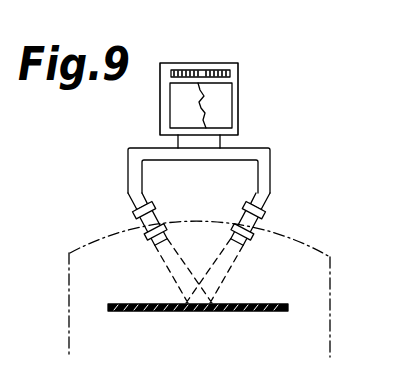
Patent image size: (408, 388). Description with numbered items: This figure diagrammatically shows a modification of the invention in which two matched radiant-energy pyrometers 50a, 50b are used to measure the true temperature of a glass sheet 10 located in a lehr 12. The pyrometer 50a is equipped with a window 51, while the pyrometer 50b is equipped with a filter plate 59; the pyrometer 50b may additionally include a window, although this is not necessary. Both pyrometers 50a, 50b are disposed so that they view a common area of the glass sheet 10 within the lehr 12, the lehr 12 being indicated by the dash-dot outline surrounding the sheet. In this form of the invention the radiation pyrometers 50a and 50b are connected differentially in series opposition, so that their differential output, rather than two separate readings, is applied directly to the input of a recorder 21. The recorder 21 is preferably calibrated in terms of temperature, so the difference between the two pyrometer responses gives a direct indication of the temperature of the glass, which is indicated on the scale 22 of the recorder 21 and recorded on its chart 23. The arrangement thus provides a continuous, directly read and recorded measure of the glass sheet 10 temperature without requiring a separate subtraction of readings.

The glass sheet 10 is at (260, 313).
The lehr 12 is at (331, 297).
The recorder 21 is at (238, 78).
The scale 22 is at (211, 72).
The chart 23 is at (225, 112).
The radiant-energy pyrometer 50a is at (157, 207).
The radiant-energy pyrometer 50b is at (261, 213).
The window 51 is at (150, 241).
The filter plate 59 is at (243, 235).